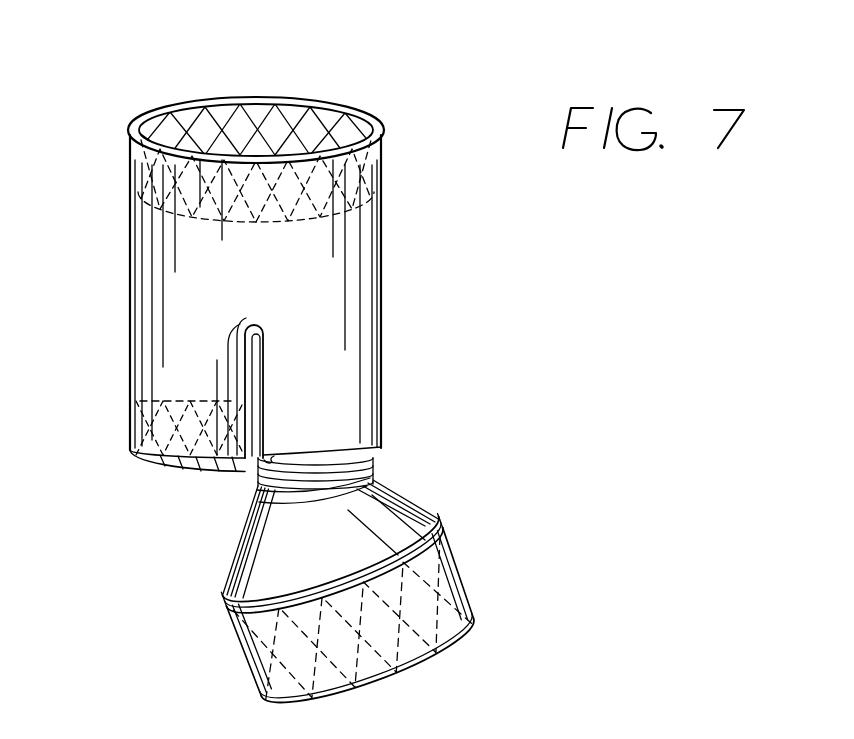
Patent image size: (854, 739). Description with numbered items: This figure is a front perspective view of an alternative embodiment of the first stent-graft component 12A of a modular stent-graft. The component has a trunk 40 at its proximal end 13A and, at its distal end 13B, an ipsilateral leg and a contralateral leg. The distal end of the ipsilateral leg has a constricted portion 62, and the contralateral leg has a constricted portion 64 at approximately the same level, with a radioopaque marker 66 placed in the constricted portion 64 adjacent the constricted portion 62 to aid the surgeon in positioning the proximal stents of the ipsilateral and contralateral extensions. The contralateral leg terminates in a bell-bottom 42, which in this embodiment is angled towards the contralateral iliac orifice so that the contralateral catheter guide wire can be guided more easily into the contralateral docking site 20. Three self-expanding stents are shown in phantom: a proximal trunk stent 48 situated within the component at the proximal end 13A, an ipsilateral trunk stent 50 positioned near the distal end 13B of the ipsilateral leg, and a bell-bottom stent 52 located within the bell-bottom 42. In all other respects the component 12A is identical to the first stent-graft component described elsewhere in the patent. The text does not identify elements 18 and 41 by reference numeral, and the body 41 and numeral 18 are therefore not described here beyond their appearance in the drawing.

The first stent-graft component 12A is at (413, 308).
The proximal end 13A is at (207, 100).
The distal end 13B is at (178, 480).
The lower mesh screen 18 is at (163, 430).
The contralateral docking site 20 is at (335, 405).
The trunk 40 is at (138, 263).
The cylindrical housing right wall 41 is at (383, 257).
The bell-bottom 42 is at (195, 658).
The proximal trunk stent 48 is at (352, 190).
The ipsilateral trunk stent 50 is at (187, 410).
The bell-bottom stent 52 is at (433, 615).
The constricted portion 62 is at (110, 487).
The constricted portion 64 is at (370, 460).
The radioopaque marker 66 is at (224, 502).